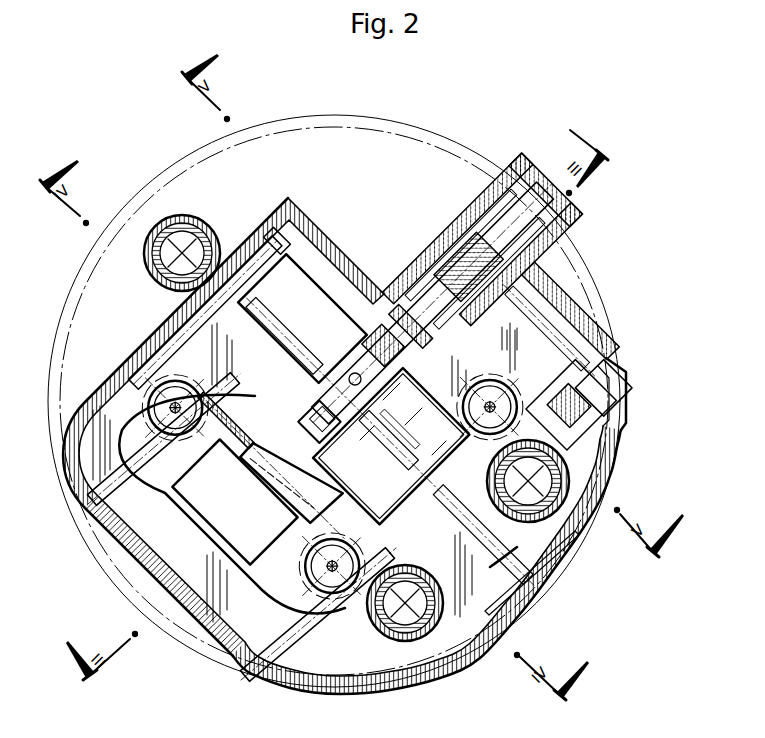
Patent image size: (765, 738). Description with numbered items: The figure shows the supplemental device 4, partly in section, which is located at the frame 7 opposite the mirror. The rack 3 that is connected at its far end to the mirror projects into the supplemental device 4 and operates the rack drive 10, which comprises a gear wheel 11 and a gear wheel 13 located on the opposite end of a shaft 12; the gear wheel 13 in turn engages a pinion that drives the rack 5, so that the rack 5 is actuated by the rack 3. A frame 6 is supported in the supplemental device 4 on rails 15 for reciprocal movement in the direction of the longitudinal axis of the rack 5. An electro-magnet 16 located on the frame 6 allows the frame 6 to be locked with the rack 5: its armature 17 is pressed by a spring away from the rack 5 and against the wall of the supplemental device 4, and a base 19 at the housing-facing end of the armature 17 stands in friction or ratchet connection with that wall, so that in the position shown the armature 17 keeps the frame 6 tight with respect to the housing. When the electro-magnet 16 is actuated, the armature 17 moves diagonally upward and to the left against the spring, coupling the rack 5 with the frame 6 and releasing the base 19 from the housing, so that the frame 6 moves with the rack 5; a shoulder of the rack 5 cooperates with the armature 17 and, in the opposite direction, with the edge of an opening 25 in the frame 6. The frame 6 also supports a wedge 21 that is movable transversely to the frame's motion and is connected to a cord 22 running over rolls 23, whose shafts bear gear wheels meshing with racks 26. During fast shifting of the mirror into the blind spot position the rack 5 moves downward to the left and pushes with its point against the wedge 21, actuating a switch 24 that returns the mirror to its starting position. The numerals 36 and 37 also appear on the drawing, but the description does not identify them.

The rack 3 is at (600, 440).
The supplemental device 4 is at (64, 455).
The rack 5 is at (407, 264).
The frame 6 is at (290, 592).
The frame 7 is at (363, 106).
The rack drive 10 is at (590, 336).
The gear wheel 11 is at (611, 365).
The shaft 12 is at (568, 302).
The gear wheel 13 is at (466, 221).
The rails 15 is at (256, 238).
The electro-magnet 16 is at (382, 498).
The armature 17 is at (416, 444).
The base 19 is at (542, 630).
The wedge 21 is at (288, 468).
The cord 22 is at (234, 415).
The rolls 23 is at (148, 376).
The switch 24 is at (230, 518).
The opening 25 is at (312, 418).
The racks 26 is at (108, 522).
The slot 36 is at (278, 374).
The frame 37 is at (322, 331).